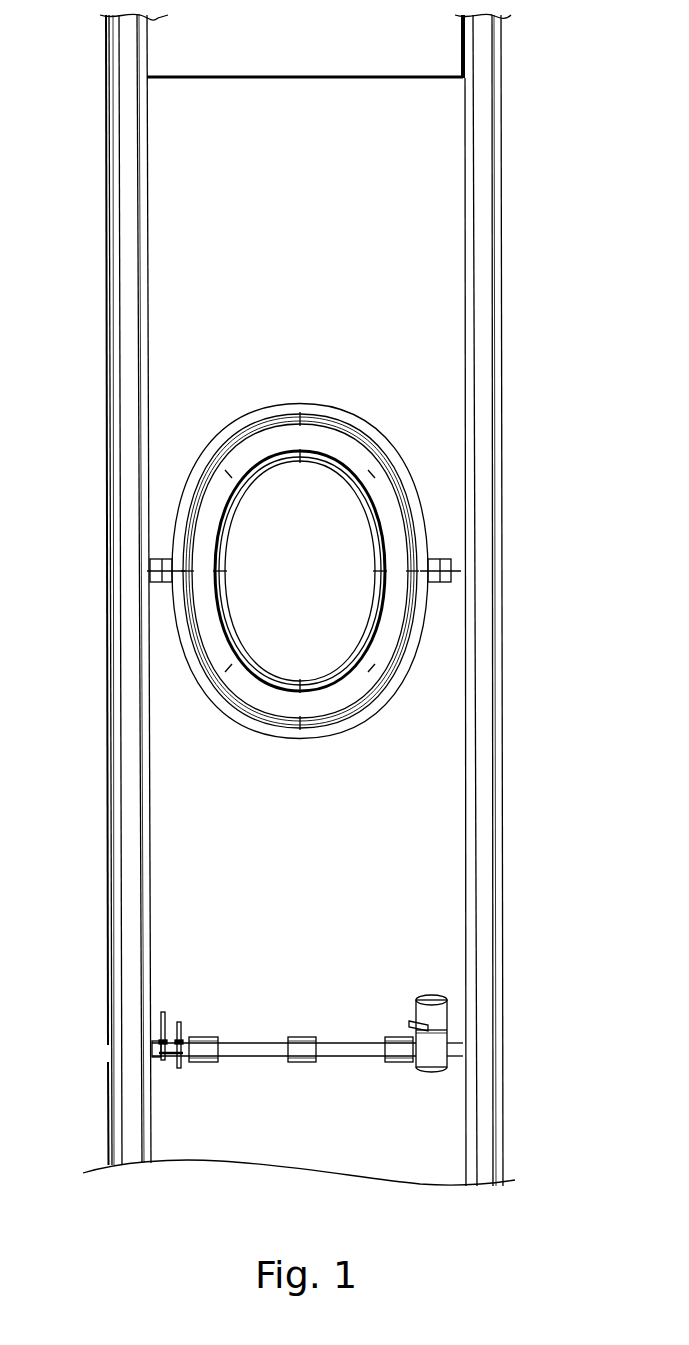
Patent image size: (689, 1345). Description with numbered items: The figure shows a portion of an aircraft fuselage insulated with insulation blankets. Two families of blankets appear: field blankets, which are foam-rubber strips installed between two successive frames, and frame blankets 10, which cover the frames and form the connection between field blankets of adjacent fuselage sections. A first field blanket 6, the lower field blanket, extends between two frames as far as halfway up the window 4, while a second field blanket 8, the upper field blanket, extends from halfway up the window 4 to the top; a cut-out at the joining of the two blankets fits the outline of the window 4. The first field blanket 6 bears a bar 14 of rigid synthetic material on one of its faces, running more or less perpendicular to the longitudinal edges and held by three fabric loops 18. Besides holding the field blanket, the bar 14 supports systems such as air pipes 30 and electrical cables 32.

The window 4 is at (322, 487).
The first field blanket 6 is at (444, 792).
The second field blanket 8 is at (440, 178).
The frame blanket 10 is at (127, 150).
The bar 14 is at (272, 1052).
The loops 18 is at (290, 1052).
The air pipes 30 is at (430, 1003).
The electrical cables 32 is at (180, 1020).